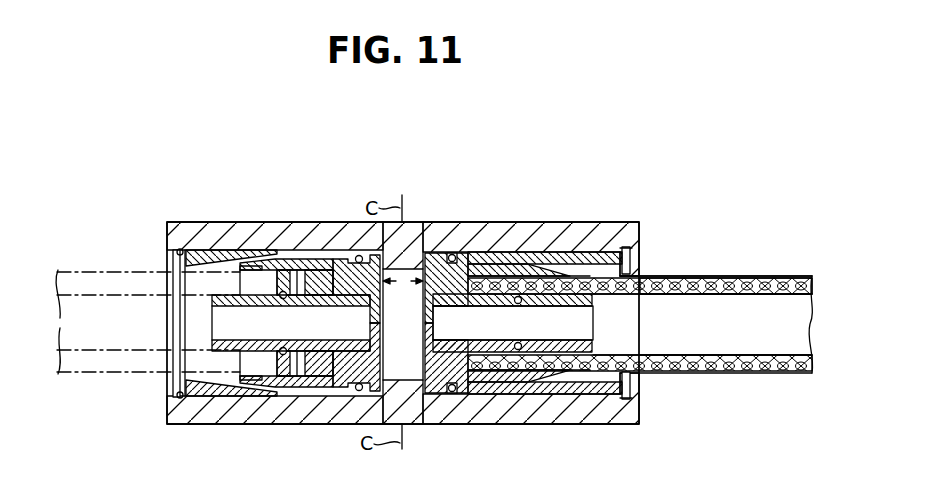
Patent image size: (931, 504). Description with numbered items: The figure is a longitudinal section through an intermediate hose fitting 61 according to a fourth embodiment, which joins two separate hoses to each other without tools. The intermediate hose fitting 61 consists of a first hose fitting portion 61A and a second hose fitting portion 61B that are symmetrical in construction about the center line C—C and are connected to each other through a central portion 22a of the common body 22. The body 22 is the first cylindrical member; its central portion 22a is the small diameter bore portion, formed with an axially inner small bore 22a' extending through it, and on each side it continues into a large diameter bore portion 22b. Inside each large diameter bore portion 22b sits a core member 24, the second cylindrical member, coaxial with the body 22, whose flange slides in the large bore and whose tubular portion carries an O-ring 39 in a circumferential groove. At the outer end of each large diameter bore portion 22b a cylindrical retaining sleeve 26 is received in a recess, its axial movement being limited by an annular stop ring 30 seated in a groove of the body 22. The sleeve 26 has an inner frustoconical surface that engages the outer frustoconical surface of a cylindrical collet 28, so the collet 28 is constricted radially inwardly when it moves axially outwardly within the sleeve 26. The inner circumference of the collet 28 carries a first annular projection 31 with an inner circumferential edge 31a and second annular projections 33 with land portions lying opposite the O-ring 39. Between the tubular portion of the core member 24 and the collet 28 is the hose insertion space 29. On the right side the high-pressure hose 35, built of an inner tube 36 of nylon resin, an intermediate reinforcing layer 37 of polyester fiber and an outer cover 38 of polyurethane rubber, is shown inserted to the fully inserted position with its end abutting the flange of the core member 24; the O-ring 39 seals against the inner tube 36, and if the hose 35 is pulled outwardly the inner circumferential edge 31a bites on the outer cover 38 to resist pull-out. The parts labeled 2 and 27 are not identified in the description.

The plug ferrule 2 is at (445, 252).
The body 22 is at (335, 222).
The central portion 22a is at (423, 346).
The axially inner small bore 22a' is at (405, 324).
The large diameter bore portion 22b is at (282, 425).
The core member 24 is at (403, 297).
The cylindrical retaining sleeve 26 is at (211, 238).
The tapered collet 27 is at (245, 256).
The cylindrical collet 28 is at (486, 262).
The hose insertion space 29 is at (253, 302).
The annular stop ring 30 is at (176, 257).
The first annular projection 31 is at (243, 272).
The inner circumferential edge 31a is at (274, 266).
The second annular projection 33 is at (303, 274).
The high-pressure hose 35 is at (66, 255).
The inner tube 36 is at (812, 297).
The intermediate reinforcing layer 37 is at (813, 284).
The outer cover 38 is at (815, 277).
The O-ring 39 is at (528, 305).
The intermediate hose fitting 61 is at (649, 168).
The first hose fitting portion 61A is at (303, 218).
The second hose fitting portion 61B is at (546, 217).